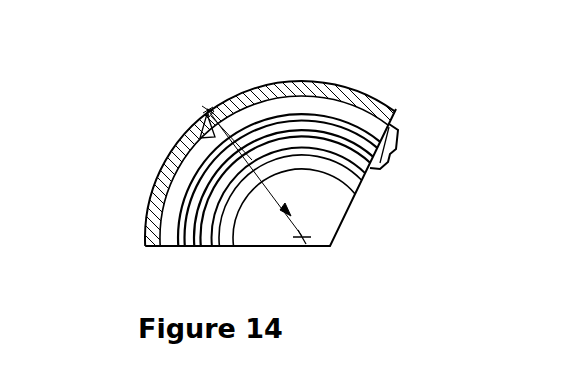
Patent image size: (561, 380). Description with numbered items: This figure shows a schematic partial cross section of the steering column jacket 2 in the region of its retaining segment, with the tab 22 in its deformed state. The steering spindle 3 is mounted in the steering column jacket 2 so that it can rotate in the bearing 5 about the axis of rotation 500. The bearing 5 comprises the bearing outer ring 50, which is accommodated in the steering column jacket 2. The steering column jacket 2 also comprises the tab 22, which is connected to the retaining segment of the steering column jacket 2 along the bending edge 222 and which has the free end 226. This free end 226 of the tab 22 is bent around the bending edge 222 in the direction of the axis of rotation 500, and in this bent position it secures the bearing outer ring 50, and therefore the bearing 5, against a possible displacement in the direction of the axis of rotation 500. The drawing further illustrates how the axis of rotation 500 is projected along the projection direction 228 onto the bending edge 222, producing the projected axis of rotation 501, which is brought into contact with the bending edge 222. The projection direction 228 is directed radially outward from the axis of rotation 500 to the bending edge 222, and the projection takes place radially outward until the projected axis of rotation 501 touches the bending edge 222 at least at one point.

The steering column jacket 2 is at (280, 190).
The steering spindle 3 is at (298, 163).
The bearing 5 is at (391, 157).
The tab 22 is at (181, 138).
The bearing outer ring 50 is at (312, 102).
The bending edge 222 is at (205, 110).
The free end 226 is at (172, 143).
The projection direction 228 is at (213, 193).
The axis of rotation 500 is at (298, 239).
The projected axis of rotation 501 is at (207, 108).